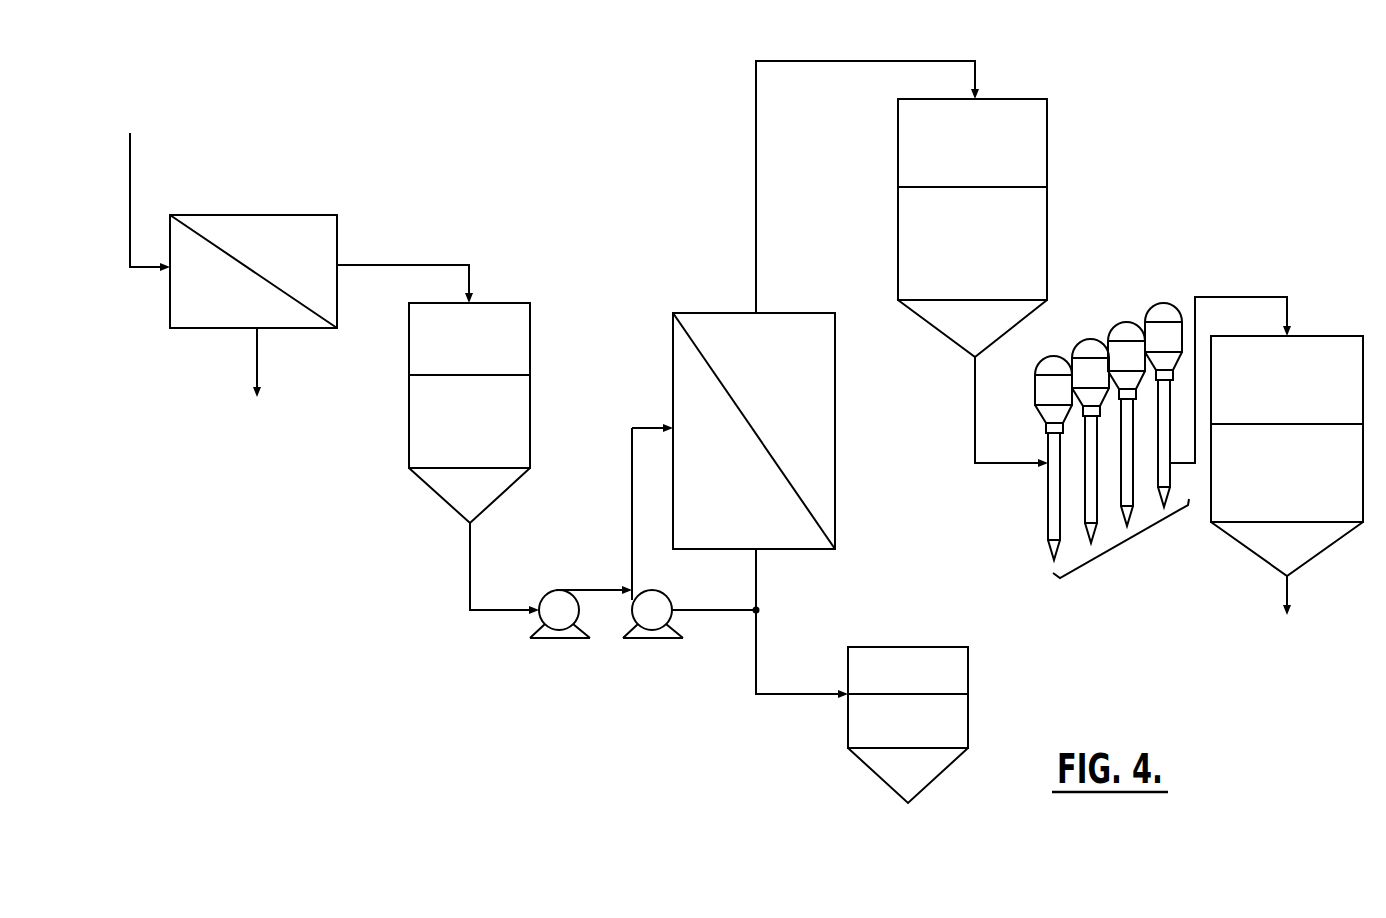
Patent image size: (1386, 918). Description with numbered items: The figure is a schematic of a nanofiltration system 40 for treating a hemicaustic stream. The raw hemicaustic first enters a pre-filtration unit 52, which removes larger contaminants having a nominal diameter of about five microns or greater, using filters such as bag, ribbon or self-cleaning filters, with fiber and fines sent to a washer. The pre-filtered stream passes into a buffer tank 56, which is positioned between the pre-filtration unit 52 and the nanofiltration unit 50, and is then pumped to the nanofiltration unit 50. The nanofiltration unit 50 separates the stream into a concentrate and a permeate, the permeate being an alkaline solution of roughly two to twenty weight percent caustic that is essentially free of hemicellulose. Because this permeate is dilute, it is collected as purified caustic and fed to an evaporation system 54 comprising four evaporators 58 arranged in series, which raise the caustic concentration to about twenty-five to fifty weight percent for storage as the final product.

The nanofiltration system 40 is at (385, 602).
The nanofiltration unit 50 is at (816, 347).
The pre-filtration unit 52 is at (329, 245).
The evaporation system 54 is at (1129, 558).
The buffer tank 56 is at (457, 457).
The evaporator 58 is at (1163, 320).